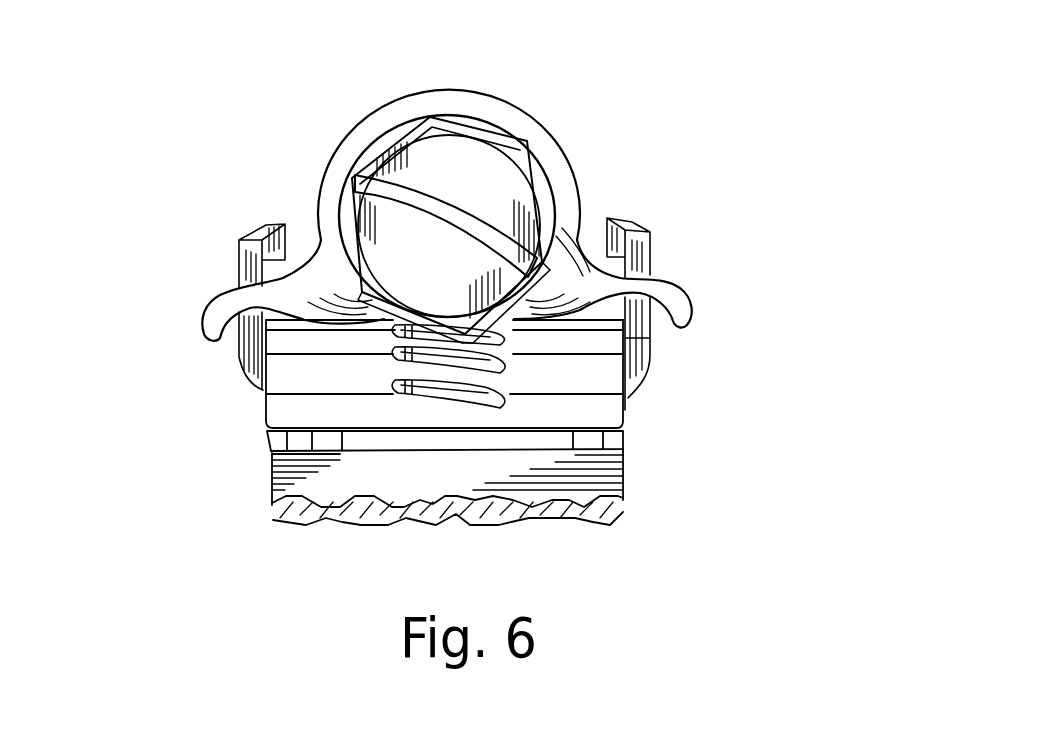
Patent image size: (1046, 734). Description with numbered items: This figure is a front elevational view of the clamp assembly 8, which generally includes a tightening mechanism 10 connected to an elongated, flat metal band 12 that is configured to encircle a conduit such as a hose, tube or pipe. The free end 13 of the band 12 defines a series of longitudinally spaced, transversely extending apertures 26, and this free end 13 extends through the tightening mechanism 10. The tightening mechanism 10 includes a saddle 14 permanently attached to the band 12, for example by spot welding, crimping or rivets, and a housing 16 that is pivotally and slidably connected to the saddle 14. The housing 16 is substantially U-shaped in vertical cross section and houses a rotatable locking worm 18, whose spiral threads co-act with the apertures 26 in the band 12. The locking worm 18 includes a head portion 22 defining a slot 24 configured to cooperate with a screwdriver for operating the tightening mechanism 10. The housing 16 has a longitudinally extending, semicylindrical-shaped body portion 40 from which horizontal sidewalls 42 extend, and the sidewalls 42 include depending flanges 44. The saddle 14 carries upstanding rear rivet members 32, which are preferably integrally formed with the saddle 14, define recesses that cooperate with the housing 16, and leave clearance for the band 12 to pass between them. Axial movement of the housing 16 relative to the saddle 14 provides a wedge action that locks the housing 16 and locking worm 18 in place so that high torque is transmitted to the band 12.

The clamp assembly 8 is at (268, 122).
The tightening mechanism 10 is at (303, 184).
The band 12 is at (623, 421).
The free end 13 is at (368, 407).
The saddle 14 is at (628, 388).
The housing 16 is at (367, 134).
The locking worm 18 is at (545, 222).
The head portion 22 is at (440, 283).
The slot 24 is at (490, 180).
The apertures 26 is at (440, 387).
The rear rivet members 32 is at (652, 325).
The body portion 40 is at (602, 117).
The sidewalls 42 is at (652, 272).
The flanges 44 is at (688, 314).